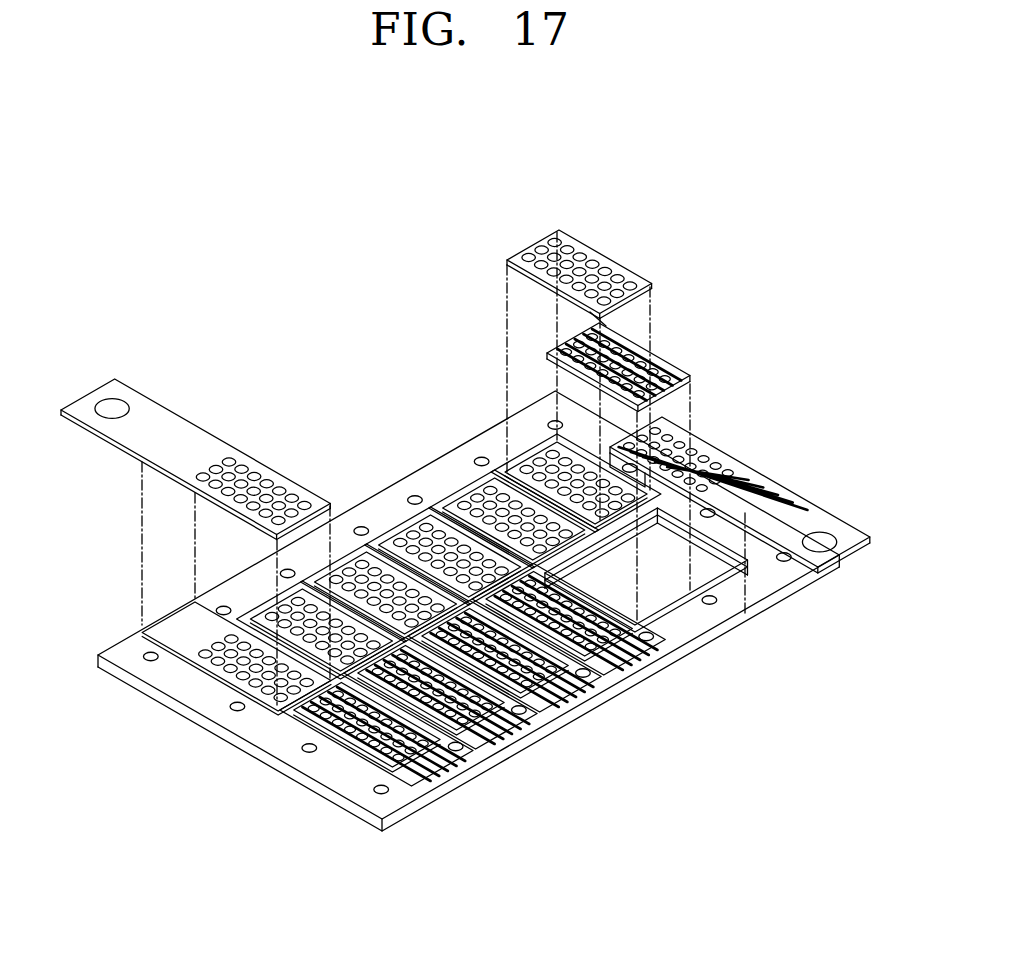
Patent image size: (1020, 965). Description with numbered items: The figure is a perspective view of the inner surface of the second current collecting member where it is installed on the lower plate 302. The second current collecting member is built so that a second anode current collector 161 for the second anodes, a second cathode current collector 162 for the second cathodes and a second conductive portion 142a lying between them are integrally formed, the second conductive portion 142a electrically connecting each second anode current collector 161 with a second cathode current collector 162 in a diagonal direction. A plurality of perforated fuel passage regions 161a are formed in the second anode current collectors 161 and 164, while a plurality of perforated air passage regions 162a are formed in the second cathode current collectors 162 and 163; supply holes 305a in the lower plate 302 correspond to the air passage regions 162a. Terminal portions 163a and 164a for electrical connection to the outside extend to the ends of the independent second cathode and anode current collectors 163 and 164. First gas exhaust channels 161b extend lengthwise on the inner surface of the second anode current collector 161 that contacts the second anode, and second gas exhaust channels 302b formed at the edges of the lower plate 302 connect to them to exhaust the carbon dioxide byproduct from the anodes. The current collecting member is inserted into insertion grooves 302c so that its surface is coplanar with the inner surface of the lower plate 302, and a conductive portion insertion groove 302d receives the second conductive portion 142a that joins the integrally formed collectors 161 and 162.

The lower plate 302 is at (345, 775).
The second gas exhaust channel 302b is at (665, 645).
The insertion groove 302c is at (745, 600).
The conductive portion insertion groove 302d is at (603, 530).
The supply hole 305a is at (208, 655).
The second anode current collector 161 is at (687, 372).
The perforated fuel passage region 161a is at (637, 360).
The first gas exhaust channel 161b is at (678, 362).
The second cathode current collector 162 is at (452, 508).
The perforated air passage region 162a is at (236, 458).
The independent second cathode current collector 163 is at (312, 485).
The terminal portion 163a is at (125, 392).
The independent second anode current collector 164 is at (809, 499).
The terminal portion 164a is at (850, 537).
The second conductive portion 142a is at (590, 312).